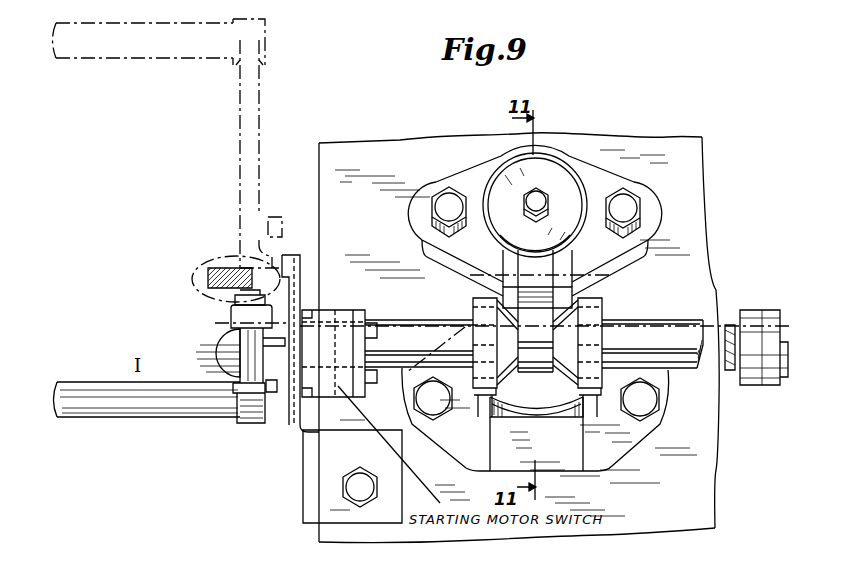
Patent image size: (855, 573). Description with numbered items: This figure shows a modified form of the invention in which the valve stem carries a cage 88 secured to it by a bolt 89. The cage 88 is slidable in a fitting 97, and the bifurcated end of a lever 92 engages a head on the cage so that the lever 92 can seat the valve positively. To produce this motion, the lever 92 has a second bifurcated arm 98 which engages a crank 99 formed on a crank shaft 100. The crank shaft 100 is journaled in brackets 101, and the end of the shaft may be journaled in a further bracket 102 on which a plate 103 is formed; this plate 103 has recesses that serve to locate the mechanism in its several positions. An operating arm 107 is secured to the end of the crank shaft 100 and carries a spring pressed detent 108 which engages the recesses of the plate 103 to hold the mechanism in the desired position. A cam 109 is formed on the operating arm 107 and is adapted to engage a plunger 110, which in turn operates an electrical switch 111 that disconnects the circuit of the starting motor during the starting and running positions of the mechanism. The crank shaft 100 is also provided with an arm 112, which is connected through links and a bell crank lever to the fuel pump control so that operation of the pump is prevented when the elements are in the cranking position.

The cage 88 is at (546, 176).
The bolt 89 is at (550, 195).
The lever 92 is at (520, 261).
The fitting 97 is at (481, 172).
The second bifurcated arm 98 is at (537, 348).
The crank 99 is at (545, 365).
The crank shaft 100 is at (663, 334).
The brackets 101 is at (615, 443).
The bracket 102 is at (325, 495).
The plate 103 is at (291, 266).
The operating arm 107 is at (240, 124).
The spring pressed detent 108 is at (248, 266).
The cam 109 is at (272, 393).
The plunger 110 is at (287, 352).
The electrical switch 111 is at (345, 338).
The arm 112 is at (769, 327).